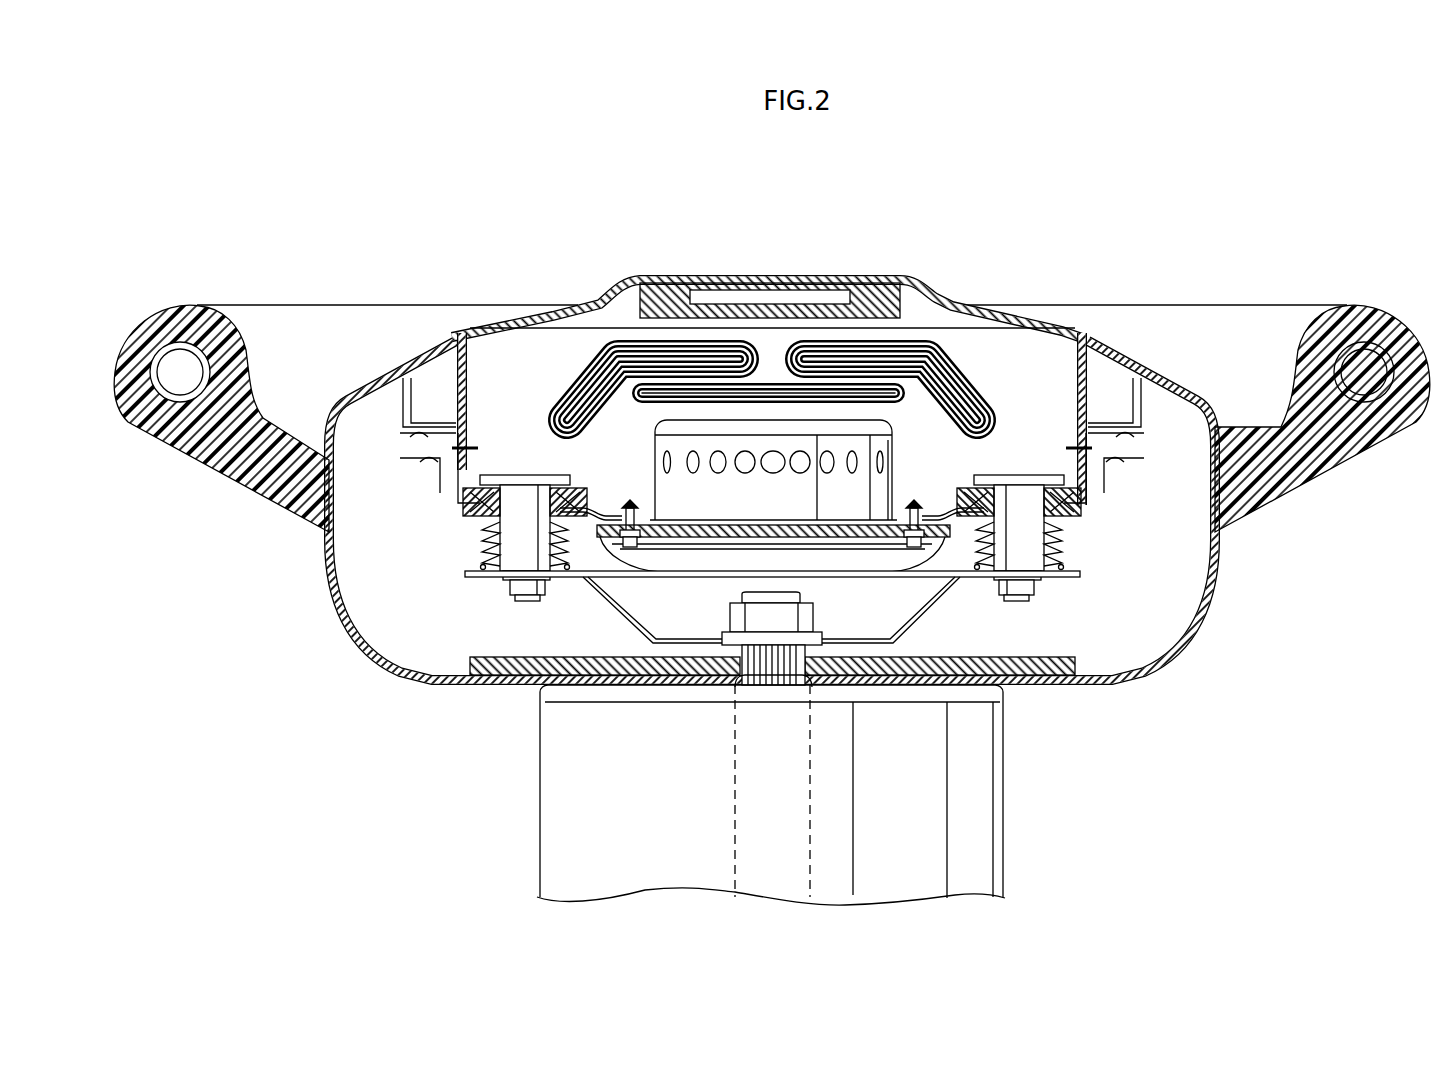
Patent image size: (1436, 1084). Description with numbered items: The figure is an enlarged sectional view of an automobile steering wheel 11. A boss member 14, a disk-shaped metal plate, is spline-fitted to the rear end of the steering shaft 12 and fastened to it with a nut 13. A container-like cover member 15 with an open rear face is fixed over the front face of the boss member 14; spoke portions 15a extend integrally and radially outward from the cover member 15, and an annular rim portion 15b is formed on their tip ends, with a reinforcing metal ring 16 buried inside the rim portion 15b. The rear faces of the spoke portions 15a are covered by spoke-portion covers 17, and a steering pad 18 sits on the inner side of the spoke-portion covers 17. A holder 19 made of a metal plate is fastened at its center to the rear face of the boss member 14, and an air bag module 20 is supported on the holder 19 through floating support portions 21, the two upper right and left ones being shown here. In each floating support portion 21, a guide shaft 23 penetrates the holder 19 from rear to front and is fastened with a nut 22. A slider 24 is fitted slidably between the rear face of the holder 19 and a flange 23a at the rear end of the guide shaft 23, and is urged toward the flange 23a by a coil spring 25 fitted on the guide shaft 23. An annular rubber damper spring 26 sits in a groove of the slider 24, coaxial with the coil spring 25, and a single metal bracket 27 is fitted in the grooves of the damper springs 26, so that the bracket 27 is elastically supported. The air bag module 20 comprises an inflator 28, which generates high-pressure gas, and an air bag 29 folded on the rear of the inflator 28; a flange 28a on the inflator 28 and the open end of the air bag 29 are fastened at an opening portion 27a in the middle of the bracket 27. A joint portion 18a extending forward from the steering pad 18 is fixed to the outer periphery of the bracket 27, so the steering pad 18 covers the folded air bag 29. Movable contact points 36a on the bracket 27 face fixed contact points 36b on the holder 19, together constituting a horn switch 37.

The steering wheel 11 is at (1052, 262).
The steering shaft 12 is at (735, 767).
The nut 13 is at (812, 626).
The boss member 14 is at (940, 657).
The cover member 15 is at (412, 676).
The spoke portion 15a is at (242, 487).
The rim portion 15b is at (158, 310).
The metal ring 16 is at (237, 356).
The spoke-portion cover 17 is at (400, 372).
The steering pad 18 is at (913, 283).
The joint portion 18a is at (470, 412).
The holder 19 is at (608, 594).
The air bag module 20 is at (573, 368).
The floating support portion 21 is at (468, 578).
The nut 22 is at (506, 588).
The guide shaft 23 is at (540, 476).
The flange 23a is at (520, 475).
The slider 24 is at (596, 508).
The coil spring 25 is at (570, 541).
The damper spring 26 is at (466, 514).
The bracket 27 is at (613, 503).
The opening portion 27a is at (657, 519).
The inflator 28 is at (758, 505).
The flange 28a is at (920, 500).
The air bag 29 is at (722, 343).
The movable contact point 36a is at (389, 454).
The fixed contact point 36b is at (418, 458).
The horn switch 37 is at (333, 452).